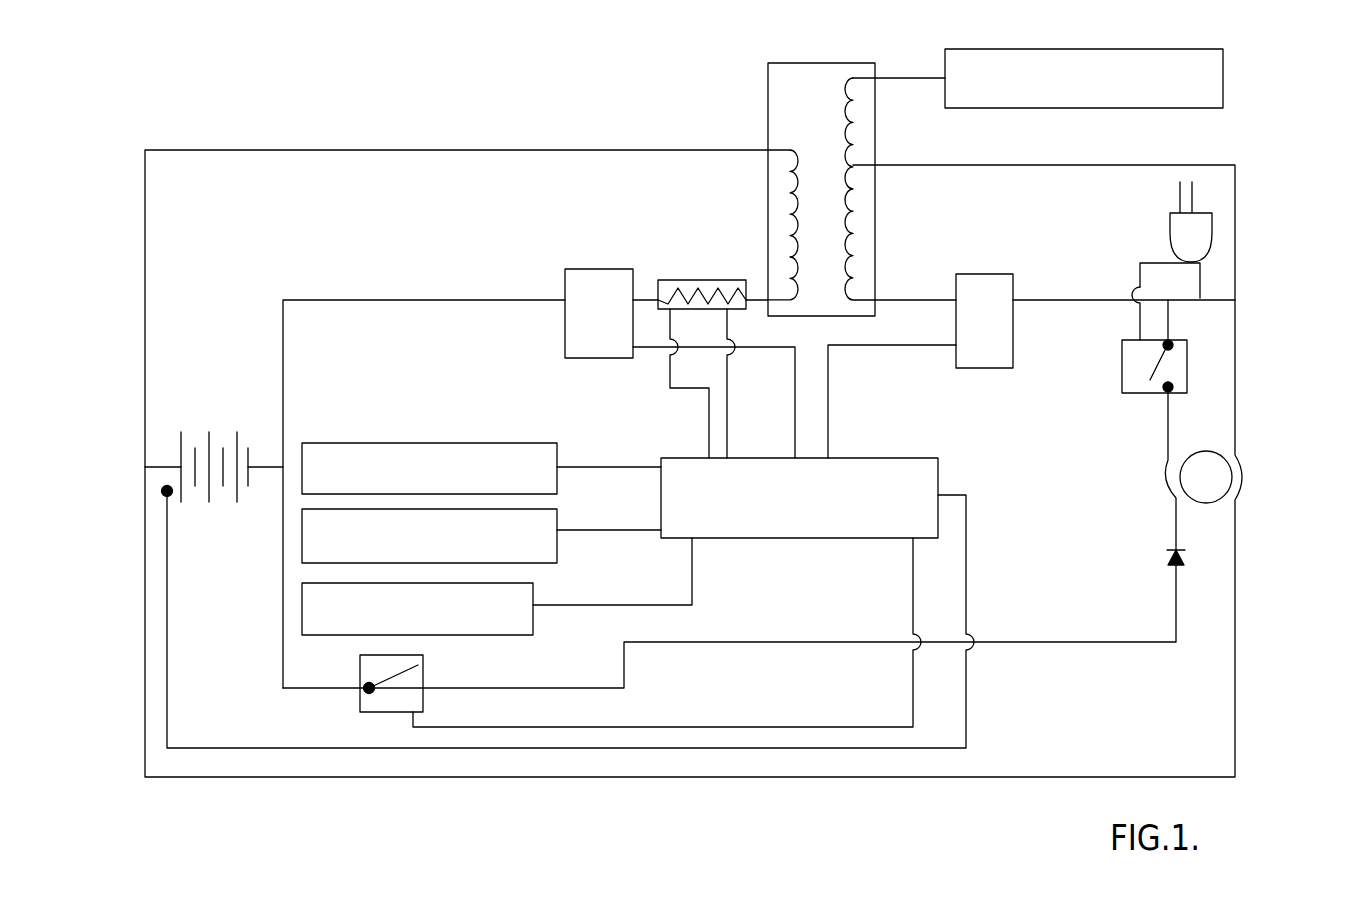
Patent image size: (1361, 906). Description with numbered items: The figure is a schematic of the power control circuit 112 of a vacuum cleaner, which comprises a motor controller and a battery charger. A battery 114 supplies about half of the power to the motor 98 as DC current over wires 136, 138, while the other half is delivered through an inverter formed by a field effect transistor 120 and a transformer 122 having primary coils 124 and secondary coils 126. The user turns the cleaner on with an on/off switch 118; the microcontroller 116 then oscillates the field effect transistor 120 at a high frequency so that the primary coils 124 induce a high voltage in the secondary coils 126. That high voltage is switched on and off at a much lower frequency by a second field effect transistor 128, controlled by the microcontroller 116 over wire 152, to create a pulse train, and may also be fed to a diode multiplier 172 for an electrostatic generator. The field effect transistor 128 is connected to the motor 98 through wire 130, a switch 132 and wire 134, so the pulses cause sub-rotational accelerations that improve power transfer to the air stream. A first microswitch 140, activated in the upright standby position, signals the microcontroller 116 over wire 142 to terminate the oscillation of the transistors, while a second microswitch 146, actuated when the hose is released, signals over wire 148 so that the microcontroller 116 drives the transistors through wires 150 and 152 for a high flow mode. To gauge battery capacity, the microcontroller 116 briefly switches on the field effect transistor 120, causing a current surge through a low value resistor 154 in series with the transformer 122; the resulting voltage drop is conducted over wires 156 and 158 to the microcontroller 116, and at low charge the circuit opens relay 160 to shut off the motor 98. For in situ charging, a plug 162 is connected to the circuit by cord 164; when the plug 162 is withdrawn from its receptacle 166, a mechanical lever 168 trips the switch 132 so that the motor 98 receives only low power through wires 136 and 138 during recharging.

The motor 98 is at (1188, 482).
The power control circuit 112 is at (806, 166).
The battery 114 is at (200, 428).
The microcontroller 116 is at (820, 538).
The on/off switch 118 is at (508, 635).
The field effect transistor 120 is at (587, 270).
The transformer 122 is at (765, 120).
The primary coils 124 is at (793, 170).
The secondary coils 126 is at (857, 236).
The field effect transistor 128 is at (990, 274).
The wire 130 is at (1052, 300).
The switch 132 is at (1122, 367).
The wire 134 is at (1167, 413).
The wire 136 is at (1072, 640).
The wire 138 is at (1021, 775).
The first microswitch 140 is at (303, 530).
The wire 142 is at (596, 535).
The second microswitch 146 is at (323, 442).
The wire 148 is at (607, 467).
The wire 150 is at (795, 392).
The wire 152 is at (828, 388).
The low value resistor 154 is at (703, 280).
The wire 156 is at (709, 392).
The wire 158 is at (727, 385).
The relay 160 is at (376, 704).
The plug 162 is at (1203, 227).
The cord 164 is at (1203, 283).
The receptacle 166 is at (1202, 240).
The mechanical lever 168 is at (1138, 316).
The diode multiplier 172 is at (1229, 71).